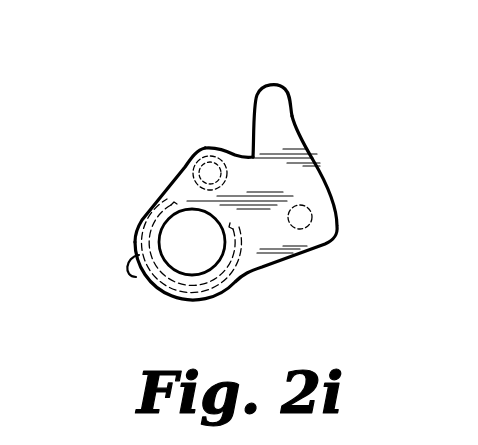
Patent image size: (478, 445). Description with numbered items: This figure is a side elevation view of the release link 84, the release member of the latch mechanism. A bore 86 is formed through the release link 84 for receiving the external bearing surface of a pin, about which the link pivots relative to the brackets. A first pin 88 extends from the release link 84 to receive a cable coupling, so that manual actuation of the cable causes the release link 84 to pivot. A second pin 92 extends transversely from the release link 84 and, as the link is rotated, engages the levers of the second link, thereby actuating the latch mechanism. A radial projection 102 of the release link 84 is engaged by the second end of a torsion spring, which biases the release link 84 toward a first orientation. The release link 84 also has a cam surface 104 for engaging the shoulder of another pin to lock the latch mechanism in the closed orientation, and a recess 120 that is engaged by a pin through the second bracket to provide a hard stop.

The release link 84 is at (330, 177).
The cam surface 104 is at (294, 119).
The recess 120 is at (248, 156).
The first pin 88 is at (207, 157).
The second pin 92 is at (313, 218).
The bore 86 is at (197, 275).
The radial projection 102 is at (147, 252).